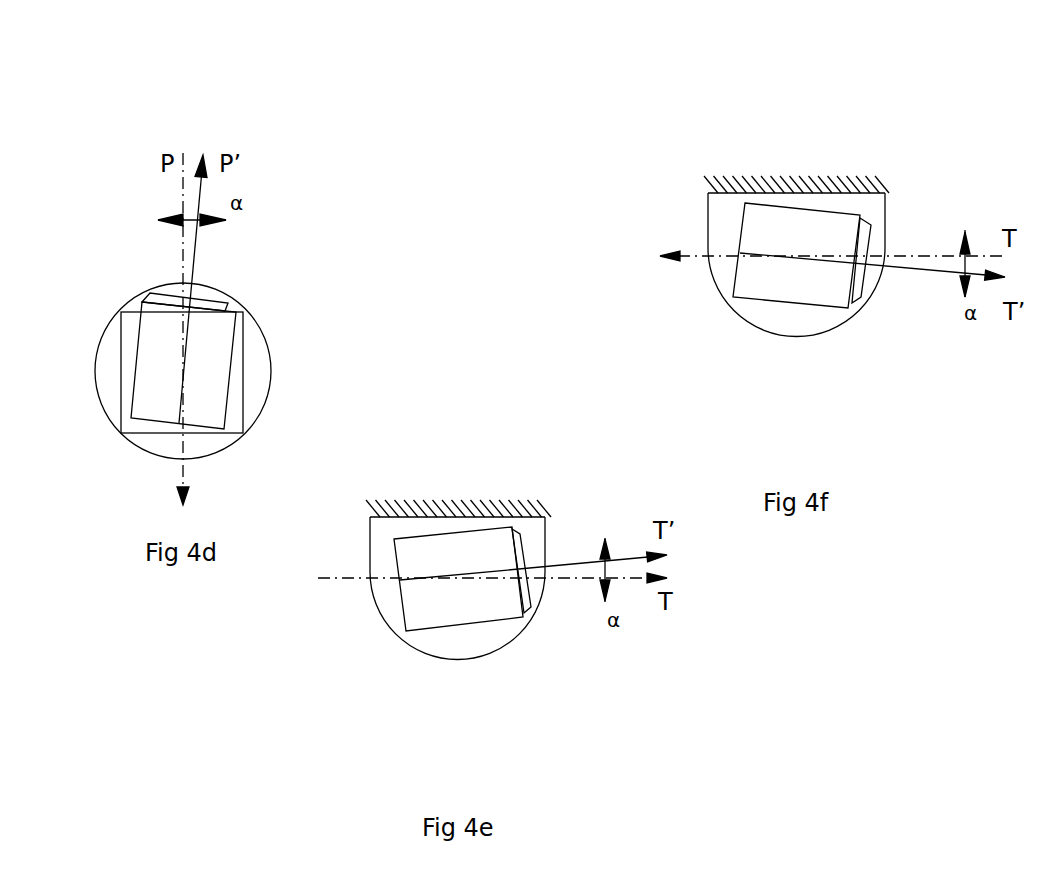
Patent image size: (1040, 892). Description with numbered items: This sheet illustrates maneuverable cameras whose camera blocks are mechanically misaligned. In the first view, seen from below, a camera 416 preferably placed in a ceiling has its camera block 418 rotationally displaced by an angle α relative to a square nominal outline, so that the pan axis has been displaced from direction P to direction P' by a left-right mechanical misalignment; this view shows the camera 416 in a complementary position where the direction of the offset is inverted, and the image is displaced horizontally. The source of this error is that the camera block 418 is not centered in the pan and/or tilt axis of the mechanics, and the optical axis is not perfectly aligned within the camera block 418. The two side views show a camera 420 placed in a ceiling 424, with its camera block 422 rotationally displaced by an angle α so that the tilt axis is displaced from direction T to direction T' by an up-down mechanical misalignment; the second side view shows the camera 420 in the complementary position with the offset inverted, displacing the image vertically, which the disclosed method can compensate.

In FIG. 4D, the camera 416 is at (94, 289).
In FIG. 4D, the camera block 418 is at (243, 313).
In FIG. 4E, the camera 420 is at (542, 650).
In FIG. 4F, the camera 420 is at (880, 326).
In FIG. 4E, the camera block 422 is at (460, 628).
In FIG. 4F, the camera block 422 is at (798, 307).
In FIG. 4E, the ceiling 424 is at (523, 517).
In FIG. 4F, the ceiling 424 is at (862, 193).